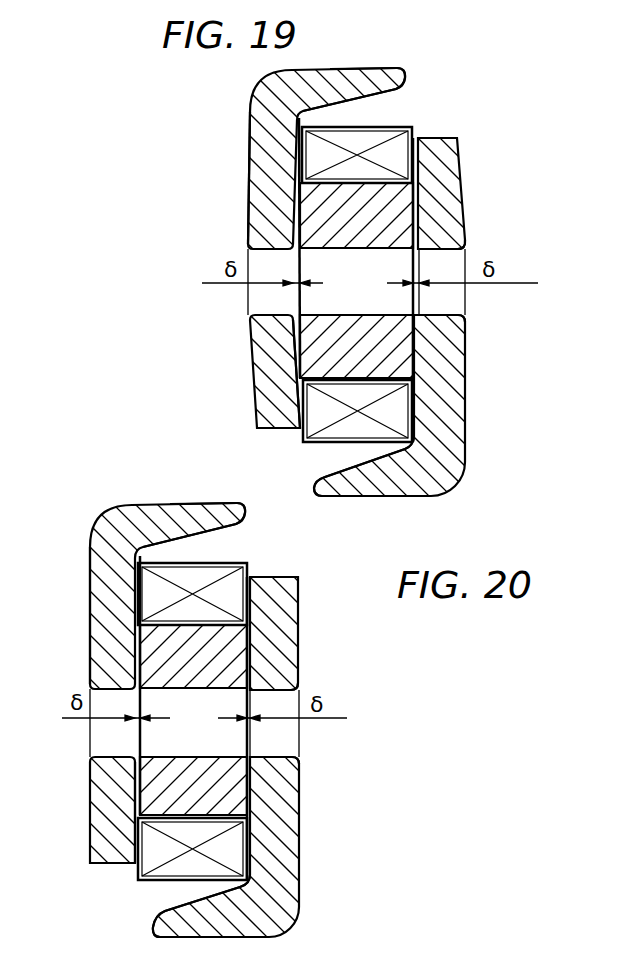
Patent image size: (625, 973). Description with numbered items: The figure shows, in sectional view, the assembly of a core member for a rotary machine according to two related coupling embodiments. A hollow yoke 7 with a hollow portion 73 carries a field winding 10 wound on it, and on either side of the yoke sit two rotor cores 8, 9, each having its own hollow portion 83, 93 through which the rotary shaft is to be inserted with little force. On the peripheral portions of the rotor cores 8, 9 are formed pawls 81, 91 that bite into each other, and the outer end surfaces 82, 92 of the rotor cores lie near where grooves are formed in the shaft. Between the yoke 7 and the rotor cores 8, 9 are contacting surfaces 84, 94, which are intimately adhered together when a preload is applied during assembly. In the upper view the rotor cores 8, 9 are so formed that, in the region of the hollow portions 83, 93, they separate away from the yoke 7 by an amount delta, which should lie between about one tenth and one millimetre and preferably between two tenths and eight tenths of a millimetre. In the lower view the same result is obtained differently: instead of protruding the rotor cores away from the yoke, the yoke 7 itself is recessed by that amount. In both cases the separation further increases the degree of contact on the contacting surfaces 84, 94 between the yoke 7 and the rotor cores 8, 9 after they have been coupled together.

In FIG. 19, the hollow yoke 7 is at (400, 197).
In FIG. 20, the hollow yoke 7 is at (245, 652).
In FIG. 19, the hollow portion of the yoke 73 is at (445, 350).
In FIG. 20, the hollow portion of the yoke 73 is at (178, 757).
In FIG. 19, the rotor core 8 is at (260, 185).
In FIG. 20, the rotor core 8 is at (100, 637).
In FIG. 19, the pawl 81 is at (387, 73).
In FIG. 20, the pawl 81 is at (187, 510).
In FIG. 19, the end surface of the rotor core 82 is at (250, 116).
In FIG. 20, the end surface of the rotor core 82 is at (92, 568).
In FIG. 19, the hollow portion of the rotor core 83 is at (256, 320).
In FIG. 20, the hollow portion of the rotor core 83 is at (98, 758).
In FIG. 19, the contacting surface 84 is at (297, 347).
In FIG. 20, the contacting surface 84 is at (140, 787).
In FIG. 19, the rotor core 9 is at (450, 210).
In FIG. 20, the rotor core 9 is at (290, 606).
In FIG. 19, the pawl 91 is at (400, 493).
In FIG. 20, the pawl 91 is at (205, 937).
In FIG. 19, the end surface of the rotor core 92 is at (465, 420).
In FIG. 20, the end surface of the rotor core 92 is at (300, 823).
In FIG. 19, the hollow portion of the rotor core 93 is at (455, 316).
In FIG. 20, the hollow portion of the rotor core 93 is at (285, 760).
In FIG. 19, the contacting surface 94 is at (422, 235).
In FIG. 20, the contacting surface 94 is at (255, 684).
In FIG. 19, the field winding 10 is at (400, 140).
In FIG. 20, the field winding 10 is at (237, 575).